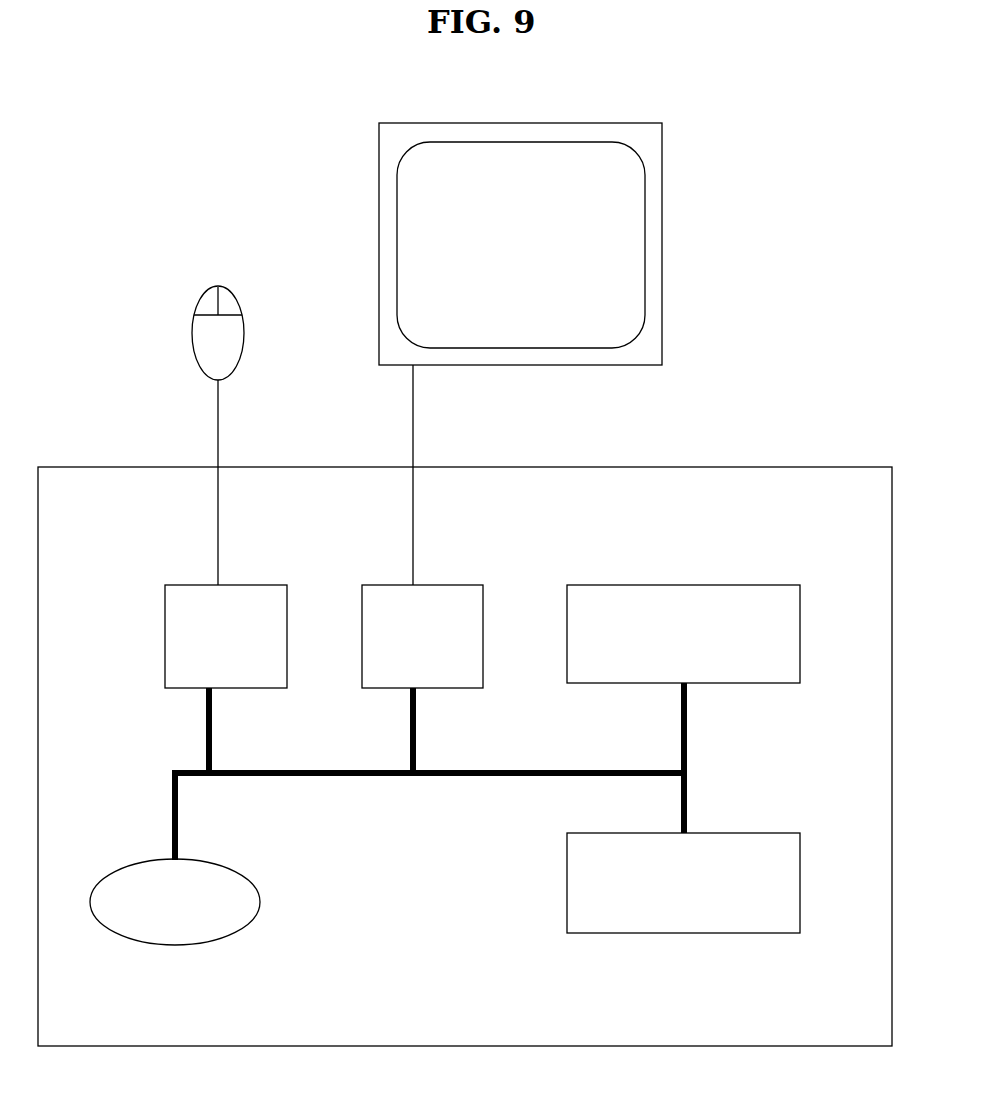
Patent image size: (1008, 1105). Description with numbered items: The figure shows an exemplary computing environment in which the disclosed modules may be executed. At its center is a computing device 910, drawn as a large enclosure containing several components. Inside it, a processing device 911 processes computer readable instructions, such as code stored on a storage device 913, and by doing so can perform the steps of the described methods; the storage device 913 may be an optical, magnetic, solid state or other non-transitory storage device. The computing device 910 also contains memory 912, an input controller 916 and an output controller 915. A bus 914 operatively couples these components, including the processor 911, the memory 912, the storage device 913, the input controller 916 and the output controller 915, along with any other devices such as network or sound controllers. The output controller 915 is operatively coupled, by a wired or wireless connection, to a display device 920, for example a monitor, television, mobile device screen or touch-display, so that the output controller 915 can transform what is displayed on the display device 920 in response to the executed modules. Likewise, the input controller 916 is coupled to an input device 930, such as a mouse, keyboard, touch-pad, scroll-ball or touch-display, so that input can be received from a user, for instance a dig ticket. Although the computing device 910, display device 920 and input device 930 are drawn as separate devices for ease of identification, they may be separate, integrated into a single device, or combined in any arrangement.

The computing device 910 is at (707, 467).
The processing device 911 is at (720, 585).
The memory 912 is at (733, 833).
The storage device 913 is at (260, 903).
The bus 914 is at (510, 773).
The output controller 915 is at (447, 585).
The input controller 916 is at (235, 583).
The display device 920 is at (662, 290).
The input device 930 is at (228, 283).